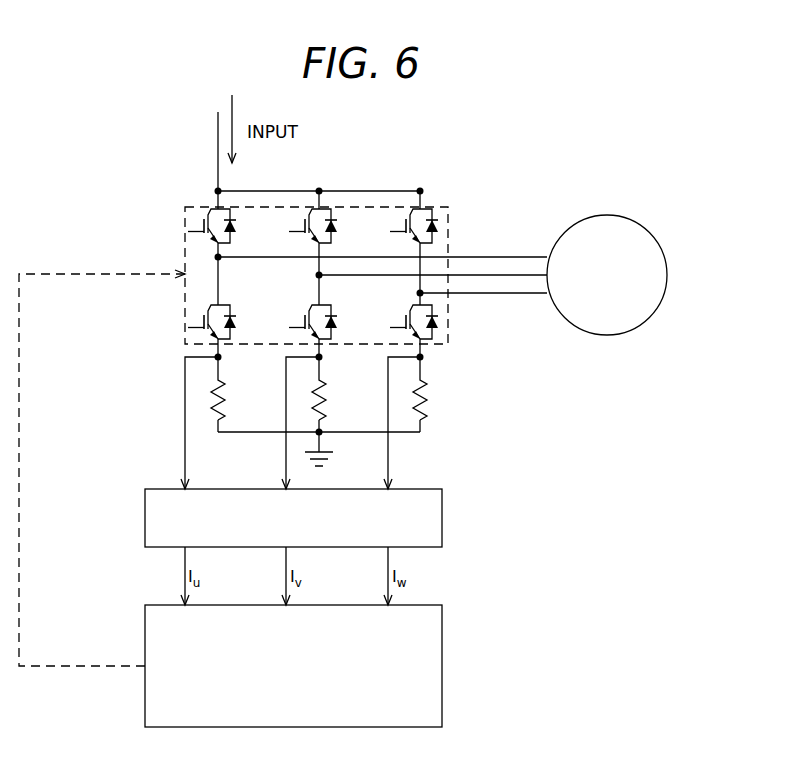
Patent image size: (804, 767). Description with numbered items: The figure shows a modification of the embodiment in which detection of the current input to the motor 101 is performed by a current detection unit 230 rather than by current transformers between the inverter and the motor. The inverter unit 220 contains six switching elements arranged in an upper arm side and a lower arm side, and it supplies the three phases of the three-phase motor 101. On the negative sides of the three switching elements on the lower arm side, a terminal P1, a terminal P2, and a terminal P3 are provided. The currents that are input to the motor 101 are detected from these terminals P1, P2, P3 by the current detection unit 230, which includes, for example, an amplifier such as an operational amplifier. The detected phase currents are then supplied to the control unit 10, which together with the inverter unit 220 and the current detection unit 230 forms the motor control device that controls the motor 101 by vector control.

The inverter unit 220 is at (448, 207).
The motor 101 is at (657, 242).
The terminal P1 is at (224, 362).
The terminal P2 is at (327, 362).
The terminal P3 is at (429, 362).
The current detection unit 230 is at (442, 517).
The control unit 10 is at (442, 643).